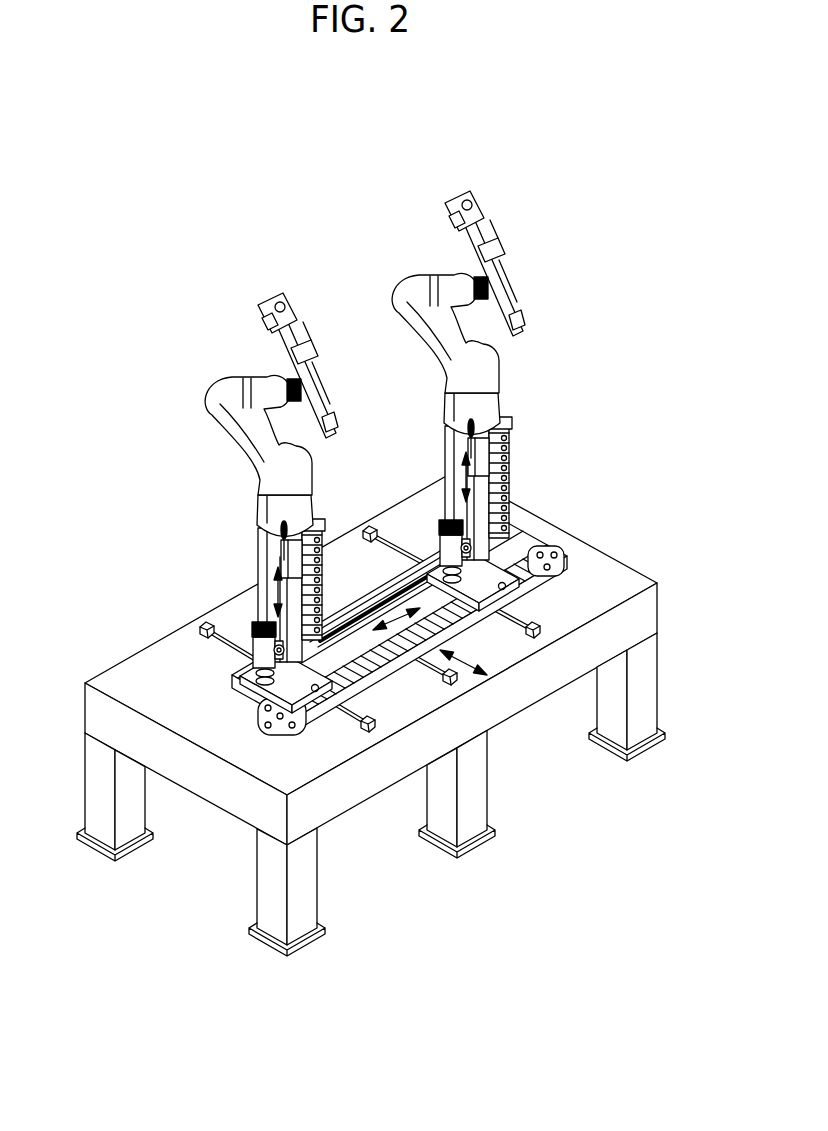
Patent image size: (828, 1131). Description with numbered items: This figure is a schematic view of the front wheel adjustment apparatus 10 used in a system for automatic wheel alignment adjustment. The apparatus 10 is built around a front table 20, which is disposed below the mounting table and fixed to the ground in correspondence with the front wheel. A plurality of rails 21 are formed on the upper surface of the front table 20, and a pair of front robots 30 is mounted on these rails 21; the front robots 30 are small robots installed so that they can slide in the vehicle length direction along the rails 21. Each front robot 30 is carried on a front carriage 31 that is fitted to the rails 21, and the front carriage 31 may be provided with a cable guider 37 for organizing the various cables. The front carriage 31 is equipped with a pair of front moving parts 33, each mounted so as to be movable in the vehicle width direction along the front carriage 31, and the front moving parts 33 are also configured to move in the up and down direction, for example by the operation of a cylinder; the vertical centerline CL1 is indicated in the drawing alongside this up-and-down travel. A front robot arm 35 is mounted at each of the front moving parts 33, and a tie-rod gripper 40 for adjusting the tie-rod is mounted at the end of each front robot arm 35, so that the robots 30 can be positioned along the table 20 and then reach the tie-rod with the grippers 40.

The front wheel adjustment apparatus 10 is at (146, 161).
The front table 20 is at (317, 760).
The rails 21 is at (378, 730).
The front robots 30 is at (319, 439).
The front carriage 31 is at (247, 690).
The front moving parts 33 is at (270, 603).
The front robot arm 35 is at (228, 416).
The cable guider 37 is at (280, 552).
The tie-rod gripper 40 is at (268, 306).
The center line CL1 is at (278, 547).